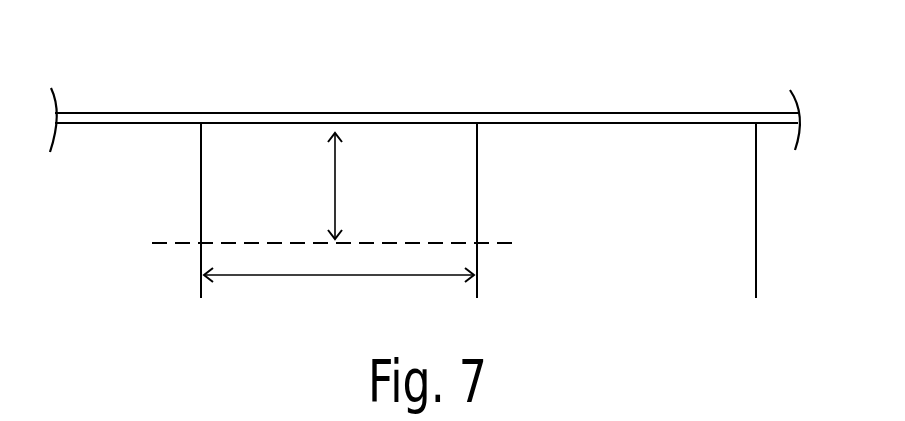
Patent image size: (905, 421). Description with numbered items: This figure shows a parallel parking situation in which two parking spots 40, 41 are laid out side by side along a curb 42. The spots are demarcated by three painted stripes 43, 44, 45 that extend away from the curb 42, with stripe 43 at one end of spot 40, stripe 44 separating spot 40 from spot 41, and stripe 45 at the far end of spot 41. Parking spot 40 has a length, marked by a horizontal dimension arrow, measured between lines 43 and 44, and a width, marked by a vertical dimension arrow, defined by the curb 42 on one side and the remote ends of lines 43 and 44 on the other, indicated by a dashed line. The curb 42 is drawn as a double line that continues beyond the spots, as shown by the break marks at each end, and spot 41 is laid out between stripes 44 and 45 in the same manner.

The parking spot 40 is at (224, 197).
The parking spot 41 is at (636, 218).
The curb 42 is at (693, 112).
The painted stripe 43 is at (201, 137).
The painted stripe 44 is at (479, 143).
The painted stripe 45 is at (756, 197).